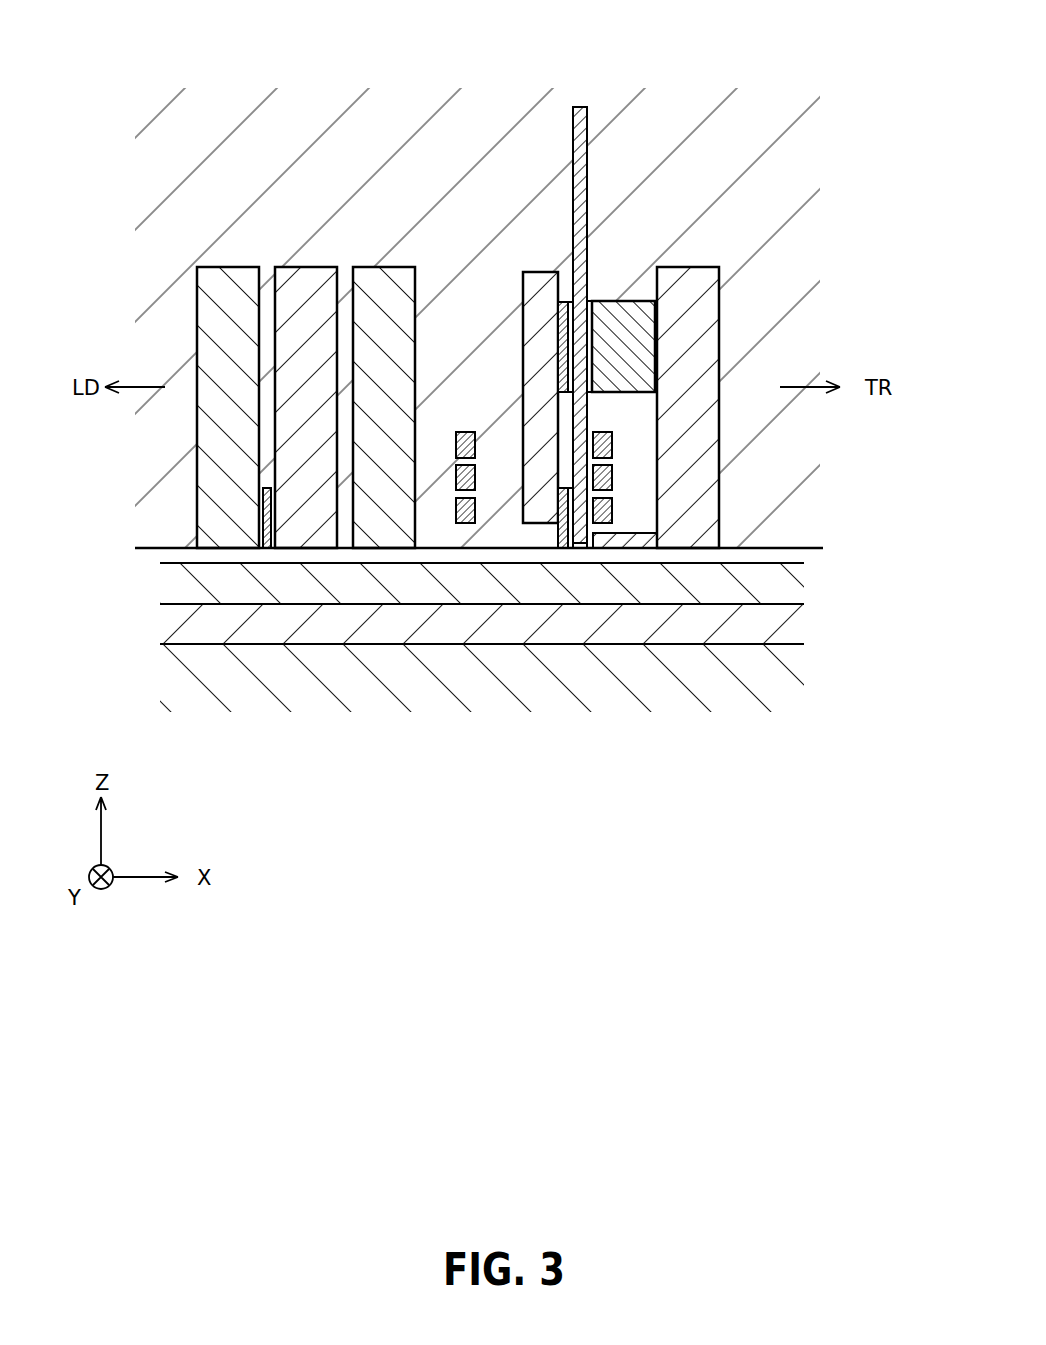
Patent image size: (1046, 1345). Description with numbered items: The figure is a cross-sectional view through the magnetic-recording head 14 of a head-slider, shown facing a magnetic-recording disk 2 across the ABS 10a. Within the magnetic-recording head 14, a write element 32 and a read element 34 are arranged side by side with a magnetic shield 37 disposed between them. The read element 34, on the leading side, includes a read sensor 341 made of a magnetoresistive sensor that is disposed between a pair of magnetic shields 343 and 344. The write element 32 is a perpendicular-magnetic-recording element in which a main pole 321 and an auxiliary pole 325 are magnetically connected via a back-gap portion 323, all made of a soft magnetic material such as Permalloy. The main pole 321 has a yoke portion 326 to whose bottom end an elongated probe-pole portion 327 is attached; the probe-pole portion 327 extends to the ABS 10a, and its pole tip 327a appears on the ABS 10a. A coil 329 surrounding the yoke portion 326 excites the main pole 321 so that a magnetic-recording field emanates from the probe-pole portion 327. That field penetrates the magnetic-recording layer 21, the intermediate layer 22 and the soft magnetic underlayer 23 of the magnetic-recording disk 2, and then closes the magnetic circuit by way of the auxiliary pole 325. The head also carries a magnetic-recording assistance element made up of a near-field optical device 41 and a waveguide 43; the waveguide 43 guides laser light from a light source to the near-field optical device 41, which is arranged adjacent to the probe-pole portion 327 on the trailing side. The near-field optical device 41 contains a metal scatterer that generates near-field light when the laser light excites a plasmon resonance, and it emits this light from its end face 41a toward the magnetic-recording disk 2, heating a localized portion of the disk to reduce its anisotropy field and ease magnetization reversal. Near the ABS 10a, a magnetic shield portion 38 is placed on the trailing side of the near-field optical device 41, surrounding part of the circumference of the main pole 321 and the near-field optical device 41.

The magnetic-recording disk 2 is at (436, 679).
The ABS 10a is at (780, 550).
The magnetic-recording head 14 is at (228, 113).
The magnetic-recording layer 21 is at (180, 585).
The intermediate layer 22 is at (180, 627).
The soft magnetic underlayer 23 is at (176, 688).
The write element 32 is at (621, 449).
The main pole 321 is at (530, 237).
The back-gap portion 323 is at (636, 318).
The auxiliary pole 325 is at (709, 342).
The yoke portion 326 is at (528, 291).
The probe-pole portion 327 is at (560, 534).
The pole tip 327a is at (562, 548).
The coil 329 is at (467, 445).
The read element 34 is at (306, 415).
The read sensor 341 is at (266, 548).
The magnetic shield 343 is at (217, 287).
The magnetic shield 344 is at (300, 290).
The magnetic shield 37 is at (383, 290).
The magnetic shield portion 38 is at (633, 540).
The near-field optical device 41 is at (588, 548).
The end face 41a is at (583, 548).
The waveguide 43 is at (588, 128).